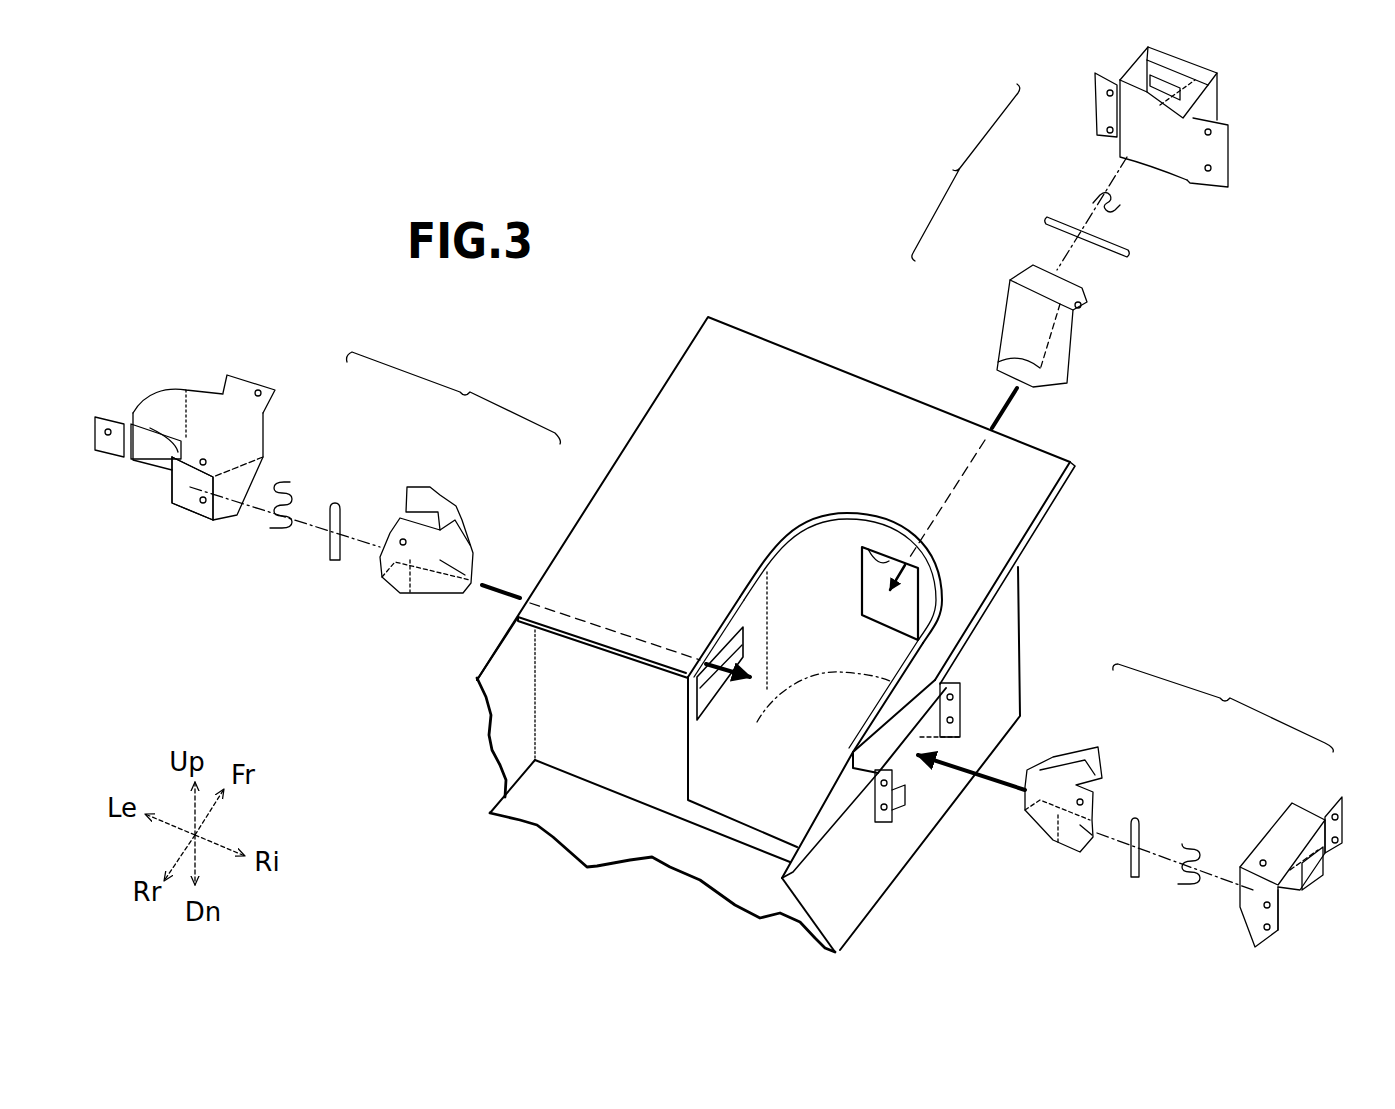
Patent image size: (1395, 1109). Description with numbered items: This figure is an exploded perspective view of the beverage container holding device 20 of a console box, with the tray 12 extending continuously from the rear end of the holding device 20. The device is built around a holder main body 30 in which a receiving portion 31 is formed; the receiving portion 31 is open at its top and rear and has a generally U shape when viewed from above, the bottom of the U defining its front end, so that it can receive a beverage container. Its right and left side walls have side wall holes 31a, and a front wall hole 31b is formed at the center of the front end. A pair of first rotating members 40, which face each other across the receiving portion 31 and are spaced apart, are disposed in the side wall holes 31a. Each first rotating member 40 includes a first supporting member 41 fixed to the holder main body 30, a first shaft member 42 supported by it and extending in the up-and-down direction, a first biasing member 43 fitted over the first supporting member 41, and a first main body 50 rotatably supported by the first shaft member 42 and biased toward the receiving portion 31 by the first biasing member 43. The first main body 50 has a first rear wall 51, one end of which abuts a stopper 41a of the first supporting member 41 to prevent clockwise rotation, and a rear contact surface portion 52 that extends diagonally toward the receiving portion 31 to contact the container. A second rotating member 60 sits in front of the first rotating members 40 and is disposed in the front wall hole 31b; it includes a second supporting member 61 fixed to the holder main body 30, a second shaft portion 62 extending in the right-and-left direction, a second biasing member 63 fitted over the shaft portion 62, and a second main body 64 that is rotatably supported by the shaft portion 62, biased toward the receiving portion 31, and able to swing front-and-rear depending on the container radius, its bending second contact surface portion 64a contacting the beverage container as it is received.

The tray 12 is at (594, 842).
The beverage container holding device 20 is at (686, 249).
The holder main body 30 is at (808, 348).
The receiving portion 31 is at (810, 767).
The side wall hole 31a is at (753, 650).
The front wall hole 31b is at (868, 545).
The first rotating member 40 is at (840, 552).
The first supporting member 41 is at (272, 432).
The stopper 41a is at (190, 507).
The first shaft member 42 is at (335, 505).
The first biasing member 43 is at (287, 500).
The first main body 50 is at (458, 494).
The first rear wall 51 is at (392, 576).
The rear contact surface portion 52 is at (437, 578).
The second rotating member 60 is at (966, 172).
The second supporting member 61 is at (1095, 110).
The second shaft portion 62 is at (1050, 236).
The second biasing member 63 is at (1095, 200).
The second main body 64 is at (1008, 305).
The second contact surface portion 64a is at (1010, 372).